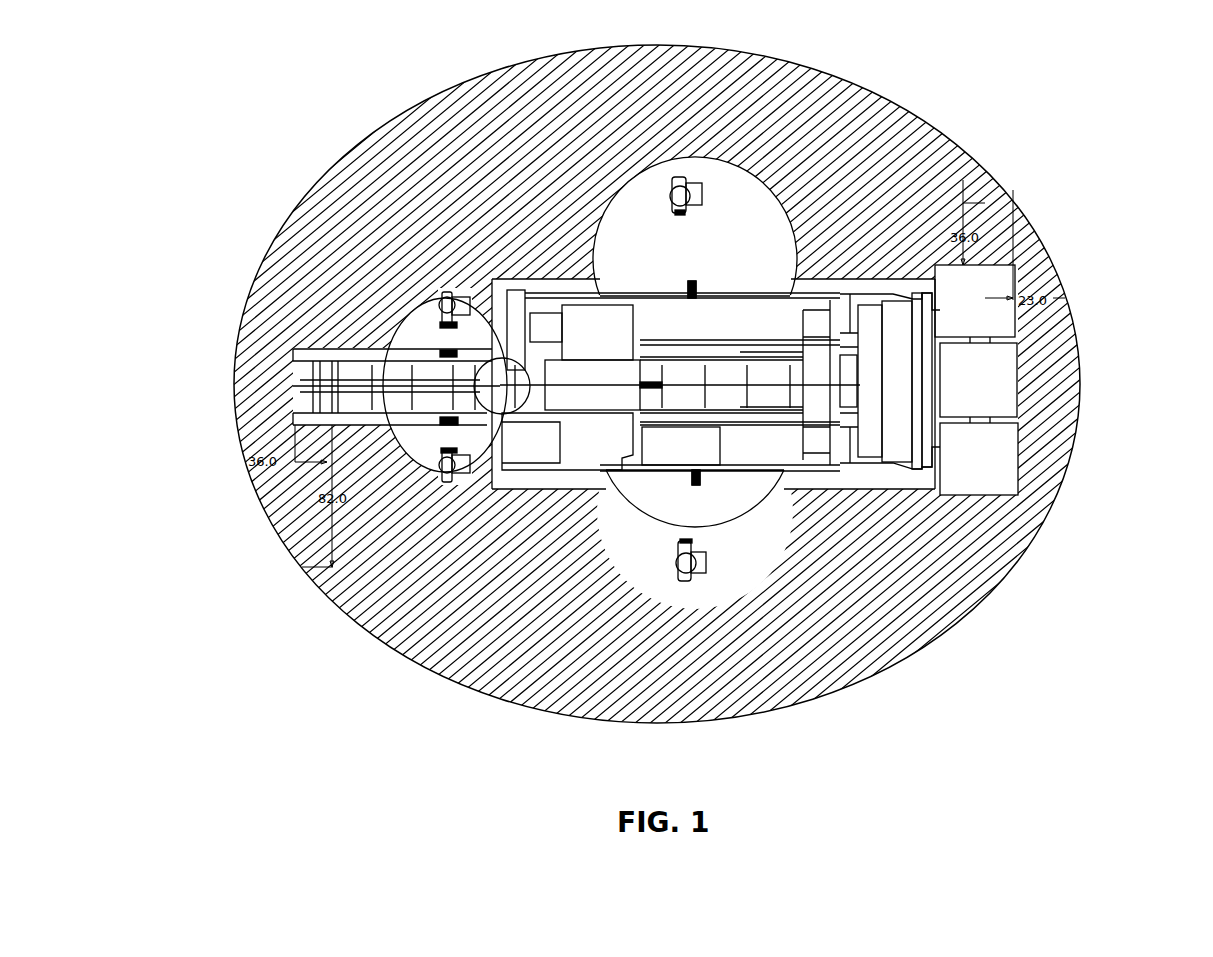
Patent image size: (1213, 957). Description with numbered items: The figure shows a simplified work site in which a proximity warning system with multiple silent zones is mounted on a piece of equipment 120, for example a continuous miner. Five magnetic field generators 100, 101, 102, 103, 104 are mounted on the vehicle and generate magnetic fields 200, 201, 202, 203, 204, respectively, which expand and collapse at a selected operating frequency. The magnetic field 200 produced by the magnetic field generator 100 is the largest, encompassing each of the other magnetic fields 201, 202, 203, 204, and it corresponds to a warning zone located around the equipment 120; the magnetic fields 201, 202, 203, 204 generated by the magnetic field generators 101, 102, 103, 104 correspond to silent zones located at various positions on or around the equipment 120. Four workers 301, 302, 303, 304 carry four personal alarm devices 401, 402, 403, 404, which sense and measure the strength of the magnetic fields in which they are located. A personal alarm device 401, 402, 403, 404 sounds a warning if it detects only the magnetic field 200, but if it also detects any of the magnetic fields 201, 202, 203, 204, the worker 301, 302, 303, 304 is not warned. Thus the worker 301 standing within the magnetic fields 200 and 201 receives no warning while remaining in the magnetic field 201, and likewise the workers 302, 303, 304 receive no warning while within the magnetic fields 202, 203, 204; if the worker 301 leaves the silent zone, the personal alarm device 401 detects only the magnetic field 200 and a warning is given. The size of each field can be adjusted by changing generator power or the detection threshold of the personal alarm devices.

The magnetic field generator 100 is at (641, 380).
The magnetic field generator 101 is at (700, 282).
The magnetic field generator 102 is at (700, 483).
The magnetic field generator 103 is at (425, 328).
The magnetic field generator 104 is at (440, 420).
The equipment 120 is at (603, 400).
The magnetic field 200 is at (925, 650).
The magnetic field 201 is at (695, 227).
The magnetic field 202 is at (695, 513).
The magnetic field 203 is at (420, 330).
The magnetic field 204 is at (410, 460).
The worker 301 is at (687, 175).
The worker 302 is at (692, 580).
The worker 303 is at (447, 293).
The worker 304 is at (450, 482).
The personal alarm device 401 is at (675, 210).
The personal alarm device 402 is at (680, 542).
The personal alarm device 403 is at (447, 348).
The personal alarm device 404 is at (447, 452).